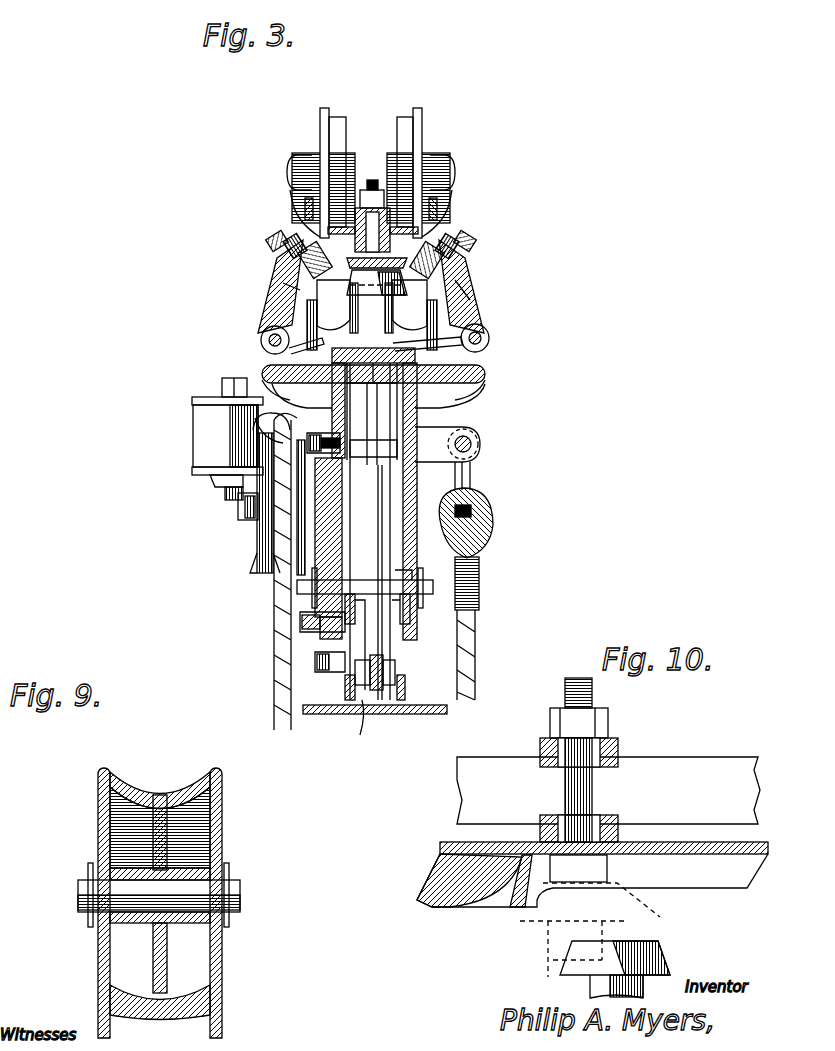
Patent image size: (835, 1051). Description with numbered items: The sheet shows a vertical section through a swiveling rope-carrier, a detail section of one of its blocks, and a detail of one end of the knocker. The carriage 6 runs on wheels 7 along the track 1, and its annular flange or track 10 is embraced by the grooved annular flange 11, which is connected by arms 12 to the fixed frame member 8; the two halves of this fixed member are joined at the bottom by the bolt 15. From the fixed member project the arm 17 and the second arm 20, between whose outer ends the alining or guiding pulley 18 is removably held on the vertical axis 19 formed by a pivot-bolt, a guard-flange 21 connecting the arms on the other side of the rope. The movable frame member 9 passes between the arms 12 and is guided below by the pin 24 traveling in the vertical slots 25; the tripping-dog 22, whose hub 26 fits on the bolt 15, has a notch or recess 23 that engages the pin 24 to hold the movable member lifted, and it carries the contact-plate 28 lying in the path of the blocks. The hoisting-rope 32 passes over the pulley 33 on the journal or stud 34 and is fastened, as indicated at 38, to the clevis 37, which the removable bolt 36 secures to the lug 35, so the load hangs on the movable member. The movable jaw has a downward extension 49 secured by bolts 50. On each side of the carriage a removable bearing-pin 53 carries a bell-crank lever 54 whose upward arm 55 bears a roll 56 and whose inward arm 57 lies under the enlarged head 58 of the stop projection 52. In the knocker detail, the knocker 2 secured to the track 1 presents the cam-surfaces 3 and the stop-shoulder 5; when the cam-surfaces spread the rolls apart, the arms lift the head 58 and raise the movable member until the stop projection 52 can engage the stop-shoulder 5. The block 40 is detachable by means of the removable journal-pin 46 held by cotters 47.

In FIG. 3, the track 1 is at (320, 233).
In FIG. 10, the track 1 is at (655, 757).
In FIG. 10, the knocker 2 is at (667, 842).
In FIG. 3, the cam-surfaces 3 is at (373, 237).
In FIG. 10, the cam-surfaces 3 is at (579, 760).
In FIG. 10, the stop-shoulder 5 is at (522, 921).
In FIG. 3, the carriage 6 is at (305, 205).
In FIG. 3, the wheels 7 is at (330, 128).
In FIG. 3, the fixed frame member 8 is at (345, 690).
In FIG. 3, the movable frame member 9 is at (418, 418).
In FIG. 3, the annular flange or track 10 is at (482, 368).
In FIG. 3, the grooved annular flange 11 is at (486, 378).
In FIG. 3, the arms 12 is at (450, 405).
In FIG. 3, the bolt 15 is at (315, 662).
In FIG. 3, the arm 17 is at (212, 476).
In FIG. 3, the alining or guiding pulley 18 is at (200, 428).
In FIG. 3, the vertical axis 19 is at (234, 378).
In FIG. 3, the second arm 20 is at (212, 397).
In FIG. 3, the guard-flange 21 is at (282, 435).
In FIG. 3, the tripping-dog 22 is at (385, 651).
In FIG. 3, the notch or recess 23 is at (408, 572).
In FIG. 3, the pin 24 is at (365, 580).
In FIG. 3, the vertical slots 25 is at (345, 639).
In FIG. 3, the hub 26 is at (361, 728).
In FIG. 3, the contact-plate 28 is at (410, 715).
In FIG. 3, the hoisting-rope 32 is at (475, 640).
In FIG. 3, the pulley 33 is at (258, 568).
In FIG. 3, the journal or stud 34 is at (240, 518).
In FIG. 3, the lug 35 is at (482, 440).
In FIG. 3, the removable bolt 36 is at (475, 458).
In FIG. 3, the clevis 37 is at (472, 484).
In FIG. 3, the rope fastening 38 is at (493, 520).
In FIG. 9, the block 40 is at (98, 960).
In FIG. 9, the removable journal-pin 46 is at (240, 897).
In FIG. 9, the cotters 47 is at (228, 870).
In FIG. 3, the downward extension 49 is at (332, 505).
In FIG. 3, the bolts 50 is at (412, 434).
In FIG. 3, the stop projection 52 is at (470, 300).
In FIG. 10, the stop projection 52 is at (590, 989).
In FIG. 3, the removable bearing-pin 53 is at (261, 340).
In FIG. 3, the bell-crank lever 54 is at (265, 328).
In FIG. 3, the arm 55 is at (278, 275).
In FIG. 3, the roll 56 is at (283, 236).
In FIG. 3, the arm 57 is at (372, 315).
In FIG. 3, the enlarged head 58 is at (283, 284).
In FIG. 10, the enlarged head 58 is at (652, 940).